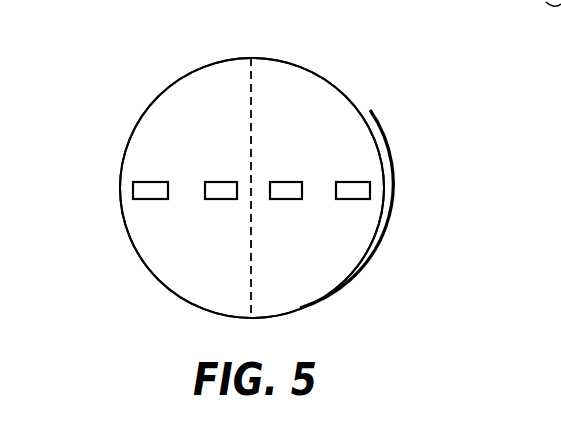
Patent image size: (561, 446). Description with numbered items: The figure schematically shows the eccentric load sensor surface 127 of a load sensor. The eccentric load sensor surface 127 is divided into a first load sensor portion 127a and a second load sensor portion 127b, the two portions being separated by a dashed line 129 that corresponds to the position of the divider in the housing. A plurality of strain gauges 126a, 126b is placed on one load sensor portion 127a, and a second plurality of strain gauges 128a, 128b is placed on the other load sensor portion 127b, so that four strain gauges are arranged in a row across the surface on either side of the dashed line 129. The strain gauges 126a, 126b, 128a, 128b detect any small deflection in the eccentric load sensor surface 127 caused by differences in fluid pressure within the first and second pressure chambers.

The eccentric load sensor surface 127 is at (333, 87).
The first load sensor portion 127a is at (187, 95).
The second load sensor portion 127b is at (350, 122).
The dashed line 129 is at (251, 88).
The strain gauge 126a is at (137, 182).
The strain gauge 126b is at (222, 181).
The strain gauge 128a is at (352, 182).
The strain gauge 128b is at (292, 181).